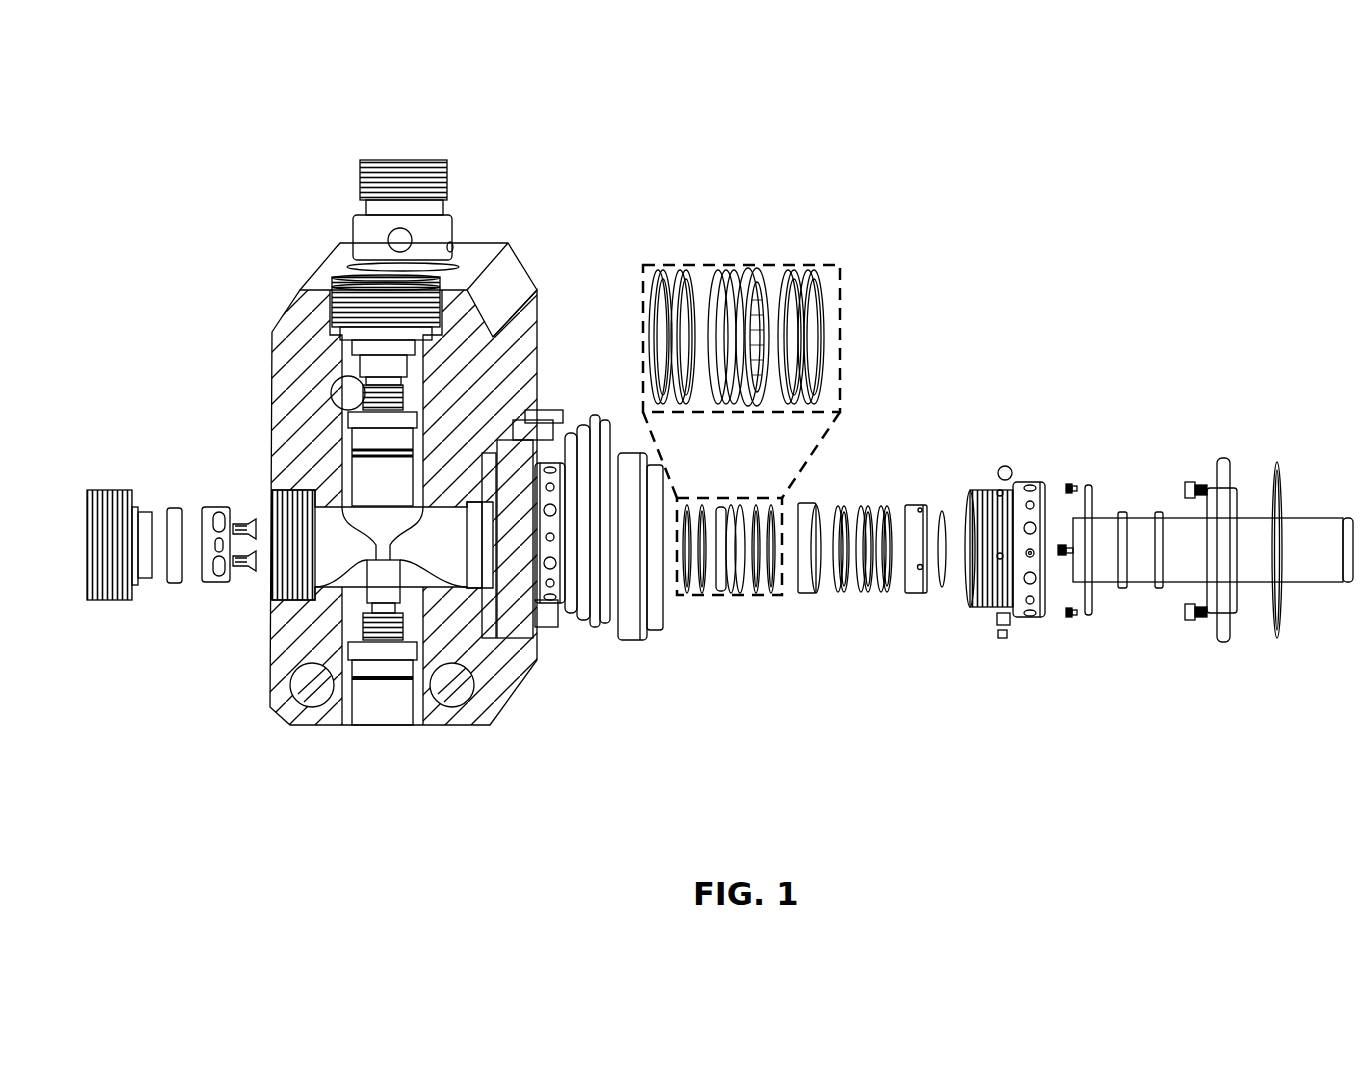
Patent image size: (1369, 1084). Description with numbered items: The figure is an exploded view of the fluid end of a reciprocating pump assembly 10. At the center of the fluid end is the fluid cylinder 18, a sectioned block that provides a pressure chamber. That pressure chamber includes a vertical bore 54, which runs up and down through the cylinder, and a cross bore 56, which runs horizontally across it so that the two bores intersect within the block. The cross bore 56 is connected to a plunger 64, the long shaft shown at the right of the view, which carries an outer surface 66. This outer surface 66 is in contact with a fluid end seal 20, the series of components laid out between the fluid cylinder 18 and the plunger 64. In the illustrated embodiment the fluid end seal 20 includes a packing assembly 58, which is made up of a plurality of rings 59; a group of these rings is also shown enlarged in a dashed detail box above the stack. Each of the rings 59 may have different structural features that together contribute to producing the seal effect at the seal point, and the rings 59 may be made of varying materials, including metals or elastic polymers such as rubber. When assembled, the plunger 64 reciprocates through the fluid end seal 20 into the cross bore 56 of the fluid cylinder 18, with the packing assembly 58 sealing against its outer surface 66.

The reciprocating pump assembly 10 is at (104, 115).
The fluid cylinder 18 is at (262, 731).
The fluid end seal 20 is at (800, 488).
The vertical bore 54 is at (386, 708).
The cross bore 56 is at (336, 558).
The packing assembly 58 is at (945, 455).
The rings 59 is at (808, 614).
The plunger 64 is at (1321, 535).
The outer surface 66 is at (1322, 584).